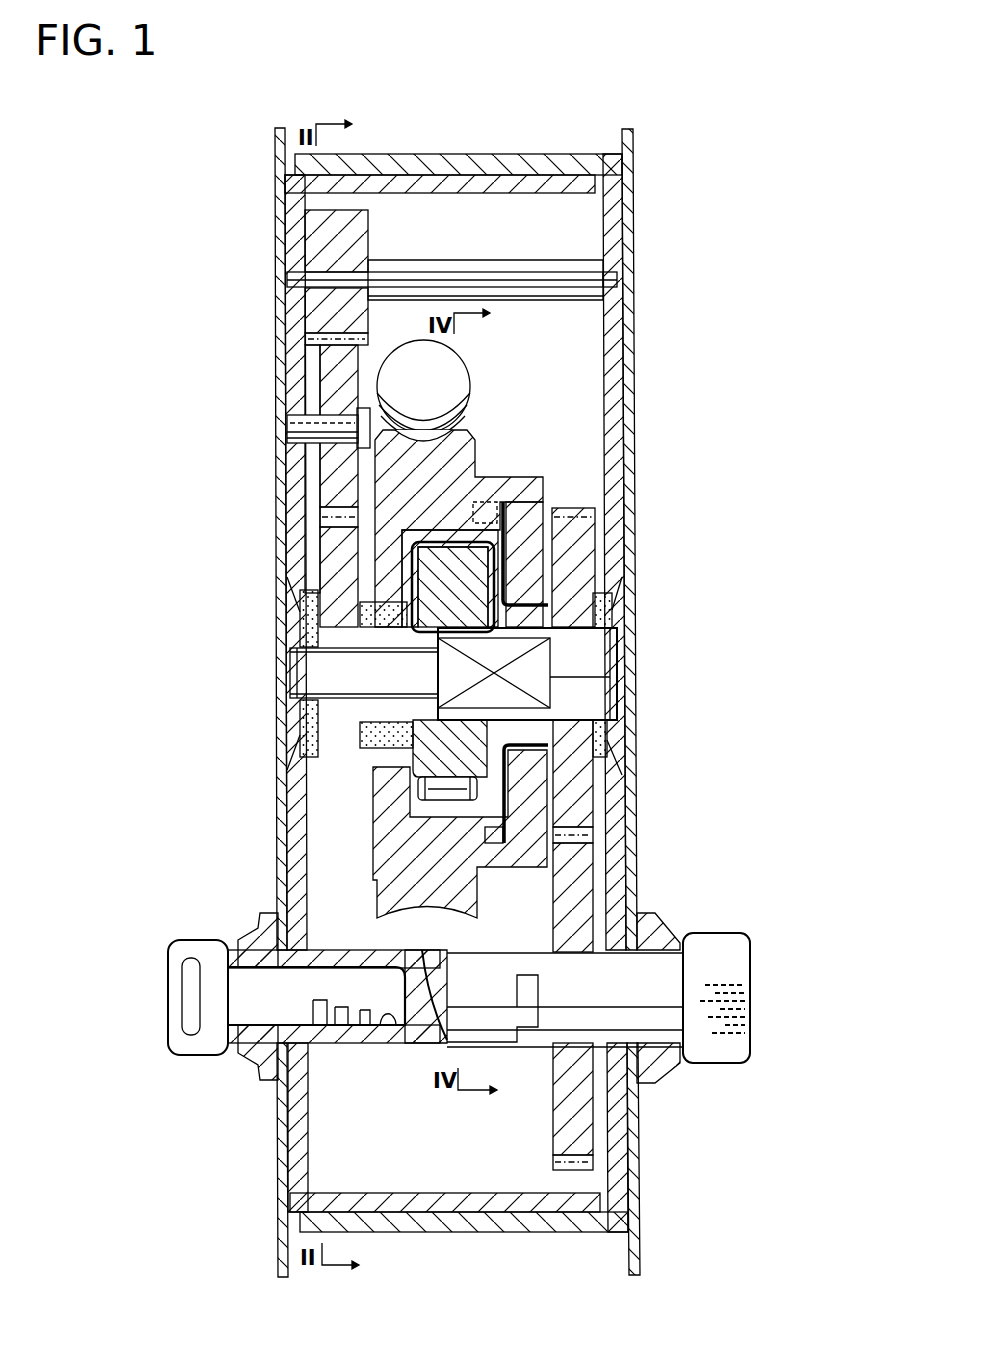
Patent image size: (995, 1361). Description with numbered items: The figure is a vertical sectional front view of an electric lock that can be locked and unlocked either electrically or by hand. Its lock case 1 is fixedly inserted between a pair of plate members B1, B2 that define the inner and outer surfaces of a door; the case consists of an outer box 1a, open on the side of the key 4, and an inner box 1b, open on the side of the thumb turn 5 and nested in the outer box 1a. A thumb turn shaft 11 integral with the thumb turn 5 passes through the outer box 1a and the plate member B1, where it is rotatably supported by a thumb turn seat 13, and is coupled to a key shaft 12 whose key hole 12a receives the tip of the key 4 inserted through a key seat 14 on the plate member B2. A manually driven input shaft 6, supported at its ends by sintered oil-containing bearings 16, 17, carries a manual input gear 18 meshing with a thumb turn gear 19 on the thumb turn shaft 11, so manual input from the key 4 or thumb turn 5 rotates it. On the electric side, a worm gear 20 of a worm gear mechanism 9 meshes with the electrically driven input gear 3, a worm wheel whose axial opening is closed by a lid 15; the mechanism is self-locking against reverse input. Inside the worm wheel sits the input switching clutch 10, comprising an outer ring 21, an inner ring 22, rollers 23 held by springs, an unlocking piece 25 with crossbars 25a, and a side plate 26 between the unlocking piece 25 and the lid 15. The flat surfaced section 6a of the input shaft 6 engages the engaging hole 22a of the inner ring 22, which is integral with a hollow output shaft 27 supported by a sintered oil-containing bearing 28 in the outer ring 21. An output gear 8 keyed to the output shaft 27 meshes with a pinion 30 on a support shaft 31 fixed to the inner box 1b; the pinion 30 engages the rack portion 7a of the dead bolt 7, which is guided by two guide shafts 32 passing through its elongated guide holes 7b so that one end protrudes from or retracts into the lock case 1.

The lock case 1 is at (456, 655).
The outer box 1a is at (388, 167).
The inner box 1b is at (550, 182).
The electrically driven input gear 3 is at (390, 460).
The key 4 is at (195, 960).
The thumb turn 5 is at (715, 948).
The manually driven input shaft 6 is at (597, 667).
The flat surfaced section 6a is at (523, 680).
The dead bolt 7 is at (333, 232).
The rack portion 7a is at (300, 340).
The guide holes 7b is at (292, 283).
The output gear 8 is at (337, 560).
The worm gear mechanism 9 is at (470, 351).
The input switching clutch 10 is at (398, 860).
The thumb turn shaft 11 is at (638, 968).
The key shaft 12 is at (357, 960).
The key hole 12a is at (380, 1023).
The thumb turn seat 13 is at (648, 1060).
The key seat 14 is at (257, 1040).
The lid 15 is at (535, 560).
The sintered oil-containing bearing 16 is at (548, 745).
The sintered oil-containing bearing 17 is at (300, 740).
The manual input gear 18 is at (573, 797).
The thumb turn gear 19 is at (580, 867).
The worm gear 20 is at (390, 375).
The outer ring 21 is at (433, 540).
The inner ring 22 is at (457, 587).
The engaging hole 22a is at (435, 652).
The rollers 23 is at (442, 790).
The unlocking piece 25 is at (612, 613).
The crossbars 25a is at (468, 528).
The side plate 26 is at (556, 528).
The output shaft 27 is at (302, 625).
The sintered oil-containing bearing 28 is at (385, 735).
The pinion 30 is at (340, 487).
The support shaft 31 is at (295, 425).
The guide shafts 32 is at (560, 270).
The plate member B1 is at (634, 176).
The plate member B2 is at (287, 180).